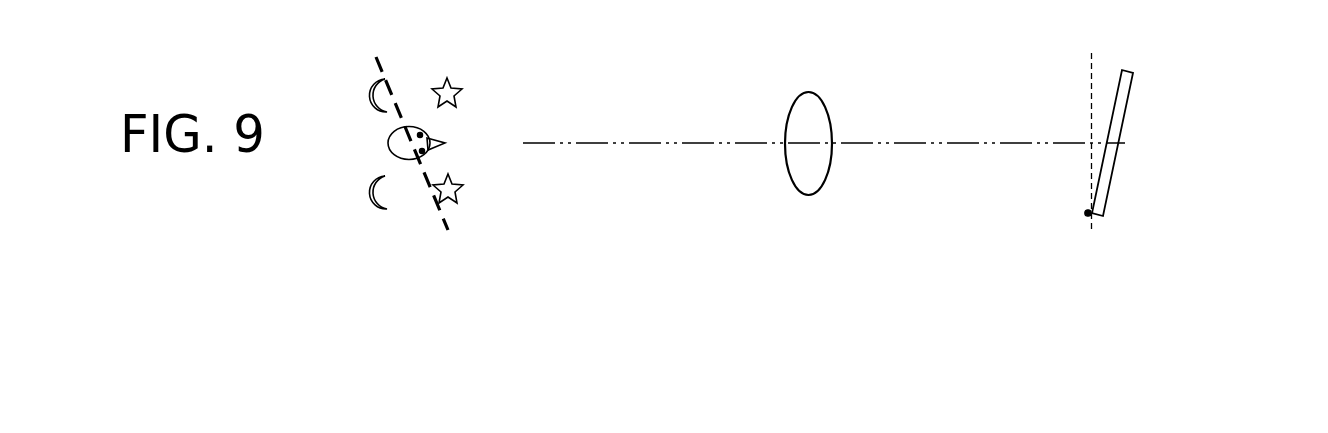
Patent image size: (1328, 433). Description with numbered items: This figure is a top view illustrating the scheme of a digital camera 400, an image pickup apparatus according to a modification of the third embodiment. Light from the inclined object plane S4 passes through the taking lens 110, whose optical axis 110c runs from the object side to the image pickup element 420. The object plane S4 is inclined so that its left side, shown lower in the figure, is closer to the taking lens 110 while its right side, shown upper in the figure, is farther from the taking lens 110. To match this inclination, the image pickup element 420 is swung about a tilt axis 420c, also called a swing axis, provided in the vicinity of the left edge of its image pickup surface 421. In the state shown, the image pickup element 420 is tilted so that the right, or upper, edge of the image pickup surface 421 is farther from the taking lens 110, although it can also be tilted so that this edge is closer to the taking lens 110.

The object plane S4 is at (384, 71).
The taking lens 110 is at (823, 92).
The optical axis of lens 110c is at (938, 142).
The image pickup element 420 is at (1122, 70).
The image pickup surface 421 is at (1100, 163).
The tilt axis 420c is at (1088, 217).
The digital camera 400 is at (1193, 38).